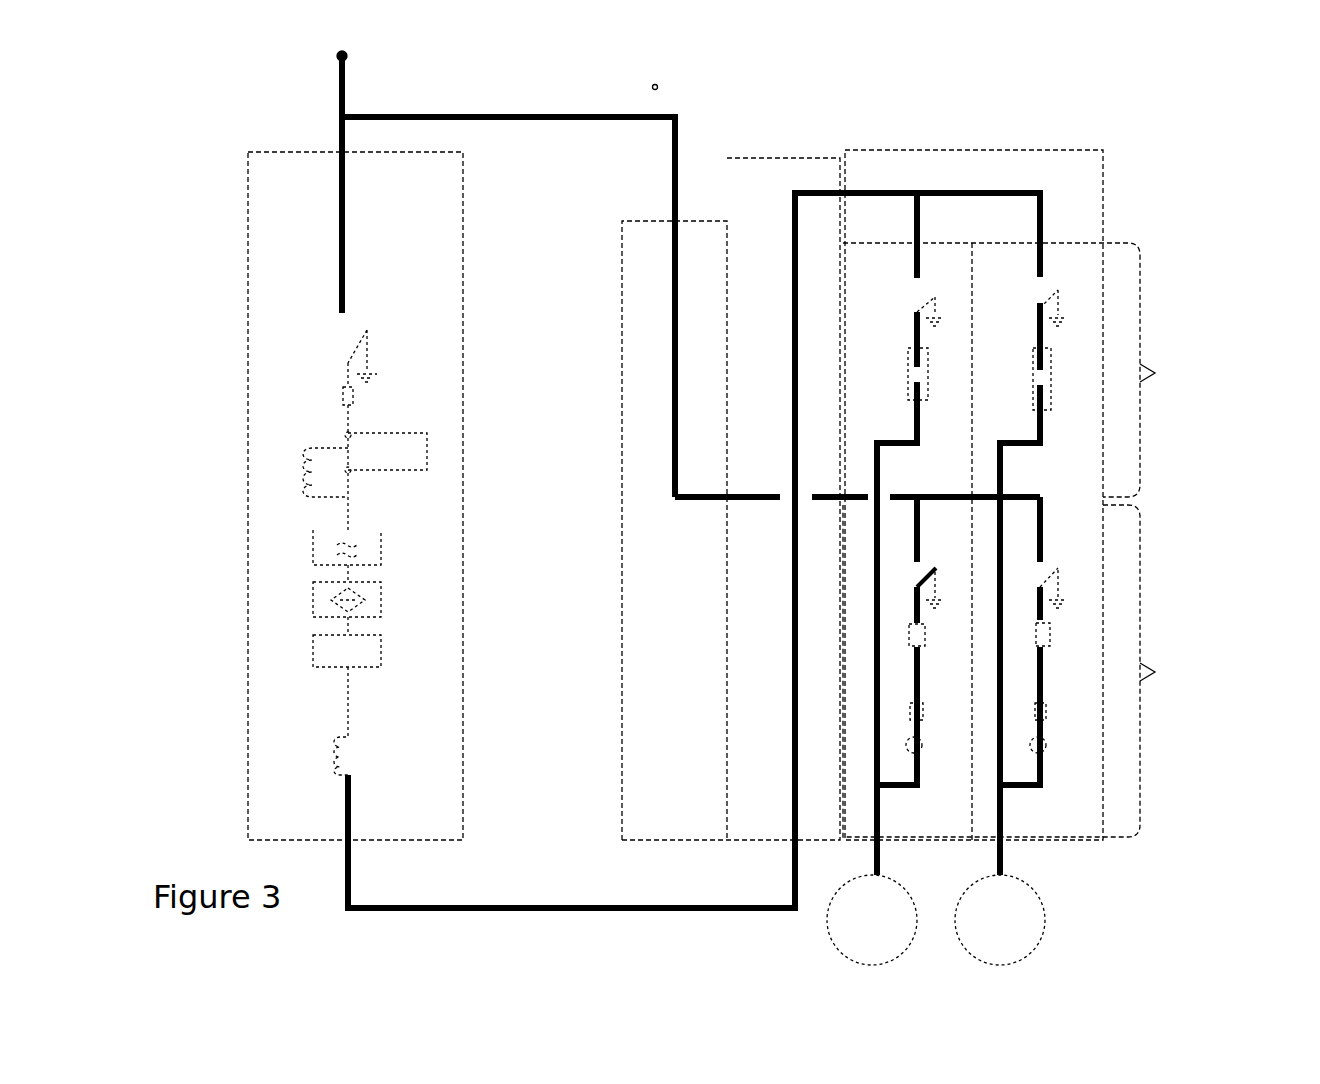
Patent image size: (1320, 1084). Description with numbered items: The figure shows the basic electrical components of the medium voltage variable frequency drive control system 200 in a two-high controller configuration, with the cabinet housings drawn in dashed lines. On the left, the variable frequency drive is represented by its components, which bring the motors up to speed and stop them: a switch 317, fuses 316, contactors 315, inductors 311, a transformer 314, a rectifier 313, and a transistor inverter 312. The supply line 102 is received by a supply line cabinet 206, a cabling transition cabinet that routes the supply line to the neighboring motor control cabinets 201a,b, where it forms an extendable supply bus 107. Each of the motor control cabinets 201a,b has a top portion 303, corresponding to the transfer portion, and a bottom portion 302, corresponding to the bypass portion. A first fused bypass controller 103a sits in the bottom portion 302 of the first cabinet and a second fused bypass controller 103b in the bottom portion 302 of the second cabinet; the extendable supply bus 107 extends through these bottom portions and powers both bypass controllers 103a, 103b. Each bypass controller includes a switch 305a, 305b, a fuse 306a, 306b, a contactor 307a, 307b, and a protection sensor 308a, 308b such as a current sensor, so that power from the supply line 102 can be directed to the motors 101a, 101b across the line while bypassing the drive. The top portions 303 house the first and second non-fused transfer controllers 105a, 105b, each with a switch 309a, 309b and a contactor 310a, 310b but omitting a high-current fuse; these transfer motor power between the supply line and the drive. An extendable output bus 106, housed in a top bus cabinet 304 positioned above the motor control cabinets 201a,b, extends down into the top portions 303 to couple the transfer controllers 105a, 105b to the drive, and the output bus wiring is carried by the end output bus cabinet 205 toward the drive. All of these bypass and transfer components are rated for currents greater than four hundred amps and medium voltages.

The drive control system 200 is at (202, 170).
The supply line 102 is at (420, 117).
The supply line cabinet 206 is at (693, 221).
The end output bus cabinet 205 is at (790, 150).
The top bus cabinet 304 is at (1000, 151).
The extendable output bus 106 is at (1043, 220).
The extendable supply bus 107 is at (1045, 497).
The motor control cabinets 201a,b is at (1043, 841).
The top portion 303 is at (1047, 370).
The bottom portion 302 is at (1050, 671).
The first non-fused transfer controller 105a is at (880, 415).
The second non-fused transfer controller 105b is at (1070, 330).
The first fused bypass controller 103a is at (898, 622).
The second fused bypass controller 103b is at (1090, 570).
The switch 309a is at (903, 297).
The switch 309b is at (1028, 297).
The contactor 310a is at (907, 375).
The contactor 310b is at (1030, 380).
The switch 305a is at (946, 547).
The switch 305b is at (1070, 552).
The fuse 306a is at (950, 633).
The fuse 306b is at (1080, 643).
The contactor 307a is at (922, 710).
The contactor 307b is at (1045, 710).
The protection sensor 308a is at (950, 752).
The protection sensor 308b is at (1075, 752).
The motor 101a is at (872, 920).
The motor 101b is at (1000, 920).
The switch 317 is at (357, 345).
The fuses 316 is at (343, 397).
The contactors 315 is at (392, 435).
The inductors 311 is at (307, 478).
The transformer 314 is at (313, 548).
The rectifier 313 is at (422, 598).
The transistor inverter 312 is at (313, 652).